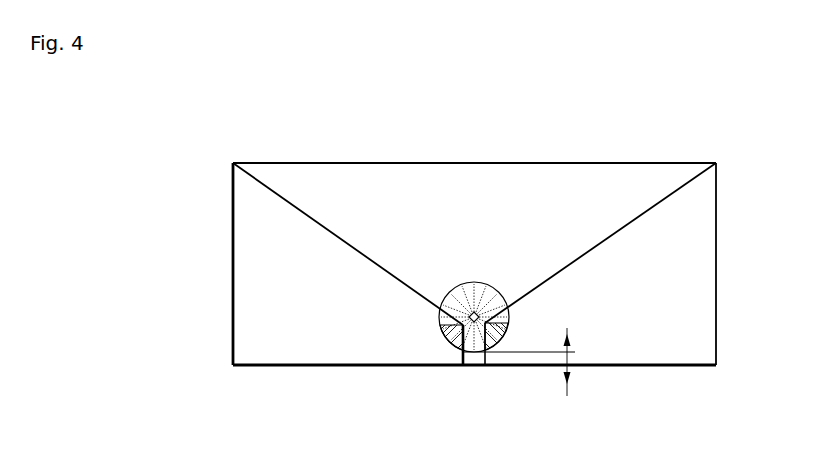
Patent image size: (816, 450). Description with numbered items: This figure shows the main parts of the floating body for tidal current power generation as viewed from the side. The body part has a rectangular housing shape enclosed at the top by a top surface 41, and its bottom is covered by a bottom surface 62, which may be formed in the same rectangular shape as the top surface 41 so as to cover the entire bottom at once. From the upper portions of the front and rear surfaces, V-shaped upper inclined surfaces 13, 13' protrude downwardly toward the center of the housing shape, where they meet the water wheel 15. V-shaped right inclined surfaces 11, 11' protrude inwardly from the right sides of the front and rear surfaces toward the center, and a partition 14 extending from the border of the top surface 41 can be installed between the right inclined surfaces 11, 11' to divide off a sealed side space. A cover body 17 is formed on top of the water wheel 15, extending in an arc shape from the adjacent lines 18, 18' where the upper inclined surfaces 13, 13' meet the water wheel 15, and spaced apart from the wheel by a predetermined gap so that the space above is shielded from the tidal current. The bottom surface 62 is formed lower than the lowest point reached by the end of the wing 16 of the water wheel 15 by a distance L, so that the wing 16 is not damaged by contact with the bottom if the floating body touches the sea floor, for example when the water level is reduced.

The top surface 41 is at (350, 162).
The partition 14 is at (473, 188).
The V-shaped upper inclined surface 13 is at (316, 244).
The V-shaped upper inclined surface 13' is at (632, 243).
The V-shaped right inclined surface 11 is at (226, 264).
The V-shaped right inclined surface 11' is at (728, 264).
The cover body 17 is at (492, 285).
The adjacent line 18 is at (419, 337).
The adjacent line 18' is at (537, 326).
The water wheel 15 is at (445, 339).
The wing 16 is at (480, 368).
The bottom surface 62 is at (310, 367).